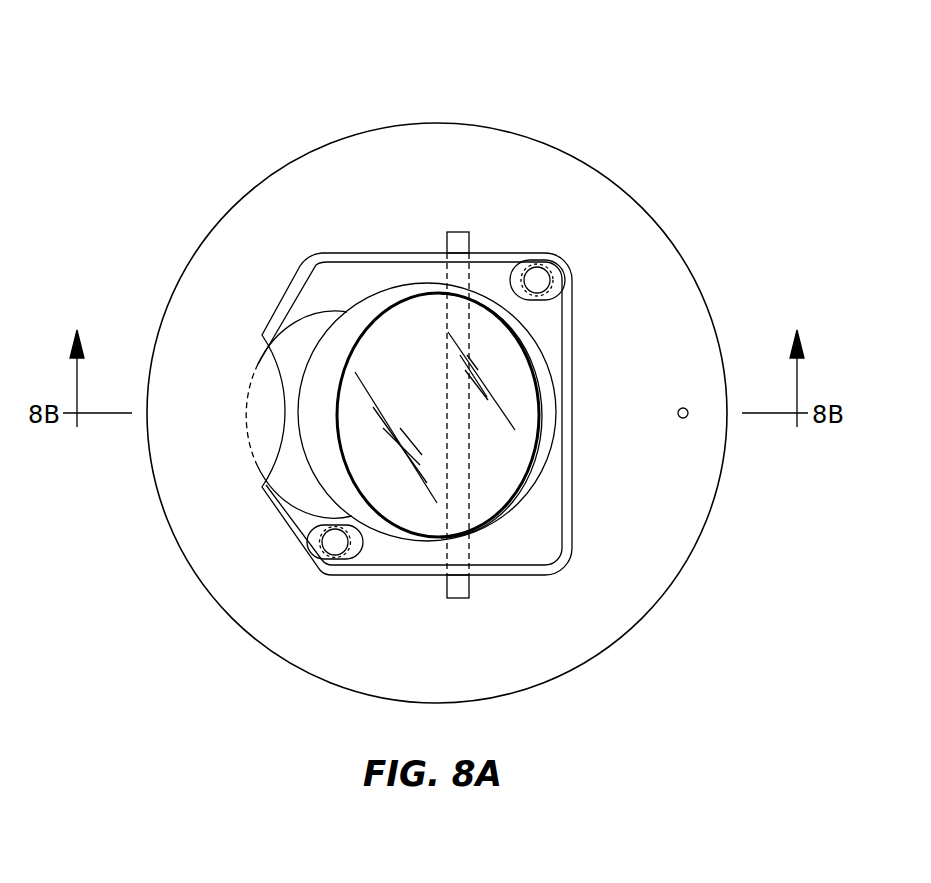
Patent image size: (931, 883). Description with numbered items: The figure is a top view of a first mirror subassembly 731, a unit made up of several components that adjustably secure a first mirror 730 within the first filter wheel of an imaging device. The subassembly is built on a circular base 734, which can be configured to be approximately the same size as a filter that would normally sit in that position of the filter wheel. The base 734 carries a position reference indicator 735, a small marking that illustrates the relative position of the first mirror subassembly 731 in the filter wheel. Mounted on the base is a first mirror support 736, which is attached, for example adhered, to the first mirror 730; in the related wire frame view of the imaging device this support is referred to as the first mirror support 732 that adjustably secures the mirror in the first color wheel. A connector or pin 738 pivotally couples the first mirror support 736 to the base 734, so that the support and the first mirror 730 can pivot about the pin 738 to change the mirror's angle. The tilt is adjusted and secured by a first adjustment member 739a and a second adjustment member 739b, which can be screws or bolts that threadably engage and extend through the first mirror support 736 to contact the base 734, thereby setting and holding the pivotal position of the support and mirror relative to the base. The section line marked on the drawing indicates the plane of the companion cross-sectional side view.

The first mirror 730 is at (418, 480).
The first mirror subassembly 731 is at (690, 62).
The first mirror support 732 is at (506, 116).
The base 734 is at (679, 298).
The position reference indicator 735 is at (688, 417).
The first mirror support 736 is at (545, 547).
The pin 738 is at (455, 232).
The first adjustment member 739a is at (326, 556).
The second adjustment member 739b is at (536, 266).